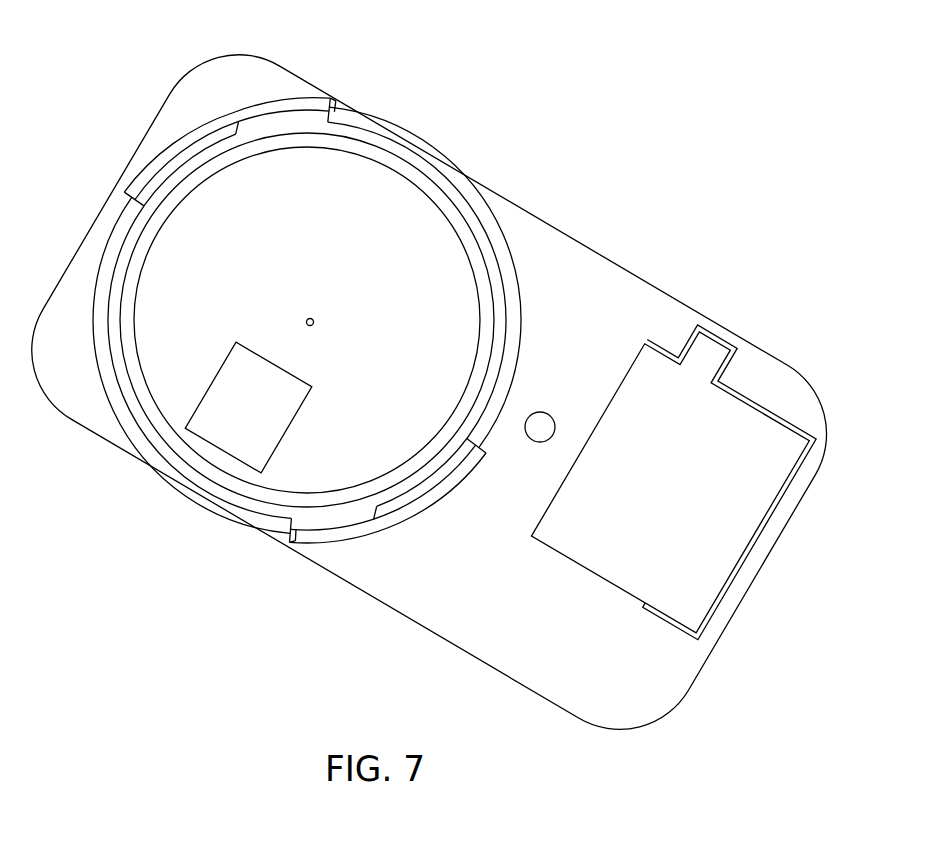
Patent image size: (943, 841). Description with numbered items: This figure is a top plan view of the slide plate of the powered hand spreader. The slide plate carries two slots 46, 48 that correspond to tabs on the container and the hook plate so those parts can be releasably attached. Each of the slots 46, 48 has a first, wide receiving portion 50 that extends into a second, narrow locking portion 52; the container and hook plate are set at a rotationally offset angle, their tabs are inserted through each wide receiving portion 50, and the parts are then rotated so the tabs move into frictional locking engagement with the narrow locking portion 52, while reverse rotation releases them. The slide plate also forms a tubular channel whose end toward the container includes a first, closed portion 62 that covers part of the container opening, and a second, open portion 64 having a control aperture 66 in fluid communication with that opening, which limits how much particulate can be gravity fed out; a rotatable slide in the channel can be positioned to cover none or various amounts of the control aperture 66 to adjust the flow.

The slot 46 is at (428, 560).
The slot 48 is at (185, 120).
The wide receiving portion 50 is at (147, 162).
The narrow locking portion 52 is at (283, 98).
The closed portion 62 is at (325, 220).
The open portion 64 is at (223, 362).
The control aperture 66 is at (232, 443).